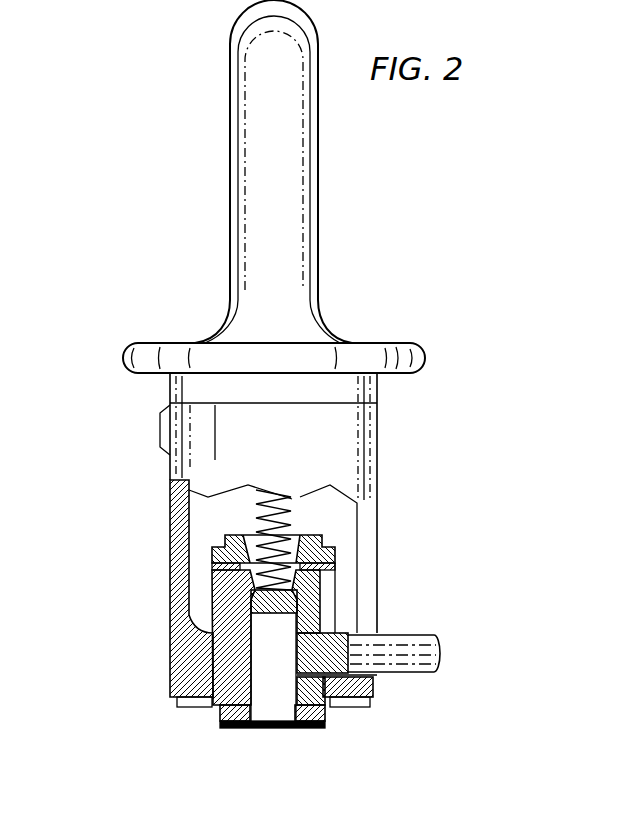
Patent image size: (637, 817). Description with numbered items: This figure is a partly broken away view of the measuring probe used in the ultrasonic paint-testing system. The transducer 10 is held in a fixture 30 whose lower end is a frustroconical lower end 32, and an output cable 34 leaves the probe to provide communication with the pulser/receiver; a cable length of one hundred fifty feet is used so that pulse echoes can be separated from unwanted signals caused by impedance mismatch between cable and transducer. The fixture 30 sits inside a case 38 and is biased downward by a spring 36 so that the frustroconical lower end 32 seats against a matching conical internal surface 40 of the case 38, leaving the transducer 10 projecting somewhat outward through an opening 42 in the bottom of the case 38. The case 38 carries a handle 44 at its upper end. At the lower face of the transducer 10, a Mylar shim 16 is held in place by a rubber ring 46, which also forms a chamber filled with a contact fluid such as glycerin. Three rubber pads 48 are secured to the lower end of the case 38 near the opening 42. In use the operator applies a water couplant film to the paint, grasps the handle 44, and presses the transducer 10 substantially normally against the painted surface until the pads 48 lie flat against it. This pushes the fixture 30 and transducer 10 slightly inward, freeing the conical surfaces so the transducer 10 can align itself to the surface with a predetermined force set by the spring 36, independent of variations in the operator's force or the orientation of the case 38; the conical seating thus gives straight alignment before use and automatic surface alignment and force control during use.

The transducer 10 is at (265, 712).
The Mylar shim 16 is at (287, 723).
The fixture 30 is at (335, 550).
The frustroconical lower end 32 is at (217, 670).
The output cable 34 is at (415, 637).
The spring 36 is at (262, 508).
The case 38 is at (170, 470).
The conical internal surface 40 is at (217, 613).
The opening 42 is at (328, 710).
The handle 44 is at (230, 82).
The rubber ring 46 is at (323, 707).
The rubber pads 48 is at (192, 708).